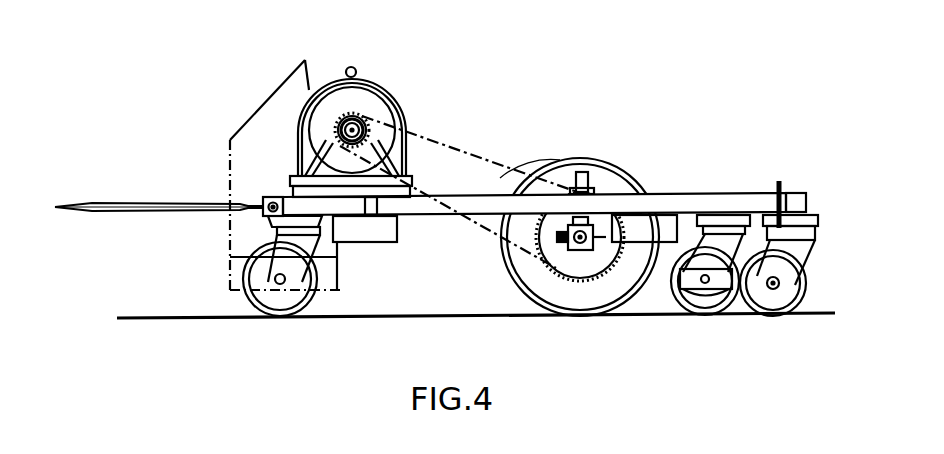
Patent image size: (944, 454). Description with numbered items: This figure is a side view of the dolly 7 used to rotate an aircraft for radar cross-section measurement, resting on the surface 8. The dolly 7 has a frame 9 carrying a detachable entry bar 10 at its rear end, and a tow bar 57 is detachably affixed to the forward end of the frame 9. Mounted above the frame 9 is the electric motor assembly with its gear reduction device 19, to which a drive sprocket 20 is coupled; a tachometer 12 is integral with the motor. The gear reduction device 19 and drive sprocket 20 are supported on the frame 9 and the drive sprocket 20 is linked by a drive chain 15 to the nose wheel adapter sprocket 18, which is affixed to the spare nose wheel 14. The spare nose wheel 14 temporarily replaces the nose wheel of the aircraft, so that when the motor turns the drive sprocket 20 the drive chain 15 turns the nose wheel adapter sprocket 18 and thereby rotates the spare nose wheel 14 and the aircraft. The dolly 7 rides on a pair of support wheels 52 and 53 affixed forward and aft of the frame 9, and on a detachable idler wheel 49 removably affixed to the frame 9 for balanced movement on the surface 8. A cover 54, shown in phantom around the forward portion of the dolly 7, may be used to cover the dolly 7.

The dolly 7 is at (437, 213).
The surface 8 is at (172, 306).
The frame 9 is at (698, 205).
The detachable entry bar 10 is at (806, 200).
The tachometer 12 is at (373, 123).
The spare nose wheel 14 is at (588, 168).
The drive chain 15 is at (503, 163).
The nose wheel adapter sprocket 18 is at (580, 268).
The gear reduction device 19 is at (360, 100).
The drive sprocket 20 is at (330, 120).
The detachable idler wheel 49 is at (700, 302).
The support wheel 52 is at (262, 313).
The support wheel 53 is at (768, 316).
The cover 54 is at (258, 133).
The tow bar 57 is at (140, 205).